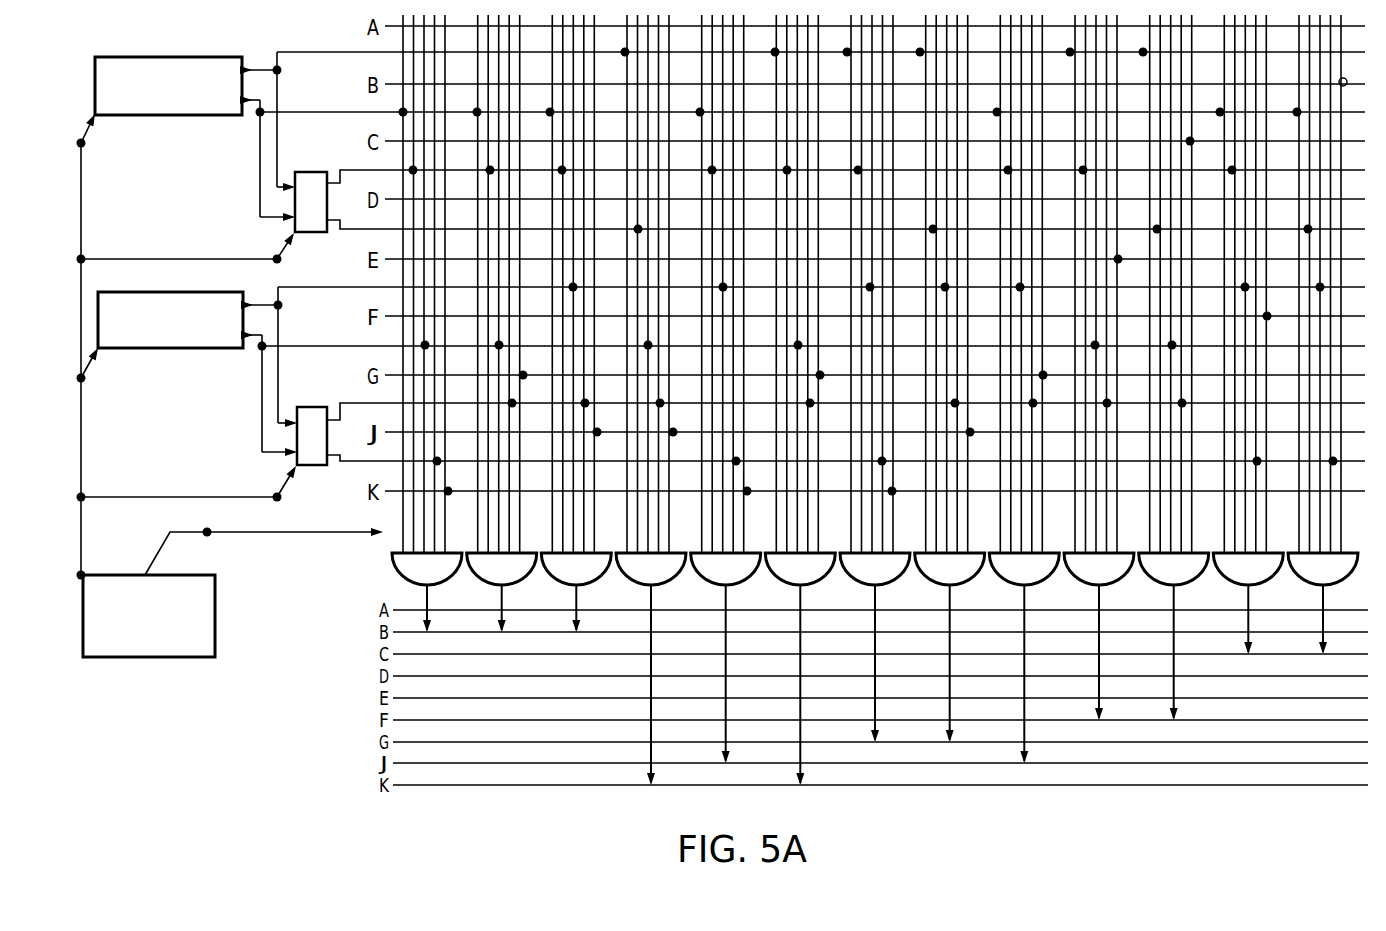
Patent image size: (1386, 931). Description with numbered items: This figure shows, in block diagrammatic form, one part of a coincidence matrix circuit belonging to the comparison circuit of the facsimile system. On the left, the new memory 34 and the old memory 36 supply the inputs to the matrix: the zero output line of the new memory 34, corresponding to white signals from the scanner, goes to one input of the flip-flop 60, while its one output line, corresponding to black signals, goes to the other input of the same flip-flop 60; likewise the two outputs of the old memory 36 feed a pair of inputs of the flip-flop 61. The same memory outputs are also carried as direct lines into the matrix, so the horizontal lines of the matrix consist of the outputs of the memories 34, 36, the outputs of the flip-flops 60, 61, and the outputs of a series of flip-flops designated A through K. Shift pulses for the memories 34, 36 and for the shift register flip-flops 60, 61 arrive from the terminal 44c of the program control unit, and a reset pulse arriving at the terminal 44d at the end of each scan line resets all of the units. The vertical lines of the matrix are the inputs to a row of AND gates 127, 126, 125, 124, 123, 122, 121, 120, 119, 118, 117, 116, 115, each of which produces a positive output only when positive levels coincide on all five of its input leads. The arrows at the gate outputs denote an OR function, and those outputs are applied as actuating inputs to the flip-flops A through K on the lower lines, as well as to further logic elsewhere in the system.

The new memory 34 is at (191, 56).
The old memory 36 is at (163, 291).
The flip-flop 60 is at (318, 210).
The flip-flop 61 is at (319, 448).
The terminal of the program control unit 44c is at (84, 575).
The terminal of the program control unit 44d is at (208, 531).
The AND gate 115 is at (1323, 603).
The AND gate 116 is at (1248, 603).
The AND gate 117 is at (1174, 636).
The AND gate 118 is at (1099, 636).
The AND gate 119 is at (1024, 658).
The AND gate 120 is at (950, 647).
The AND gate 121 is at (875, 647).
The AND gate 122 is at (800, 669).
The AND gate 123 is at (726, 658).
The AND gate 124 is at (651, 669).
The AND gate 125 is at (576, 592).
The AND gate 126 is at (502, 592).
The AND gate 127 is at (427, 592).